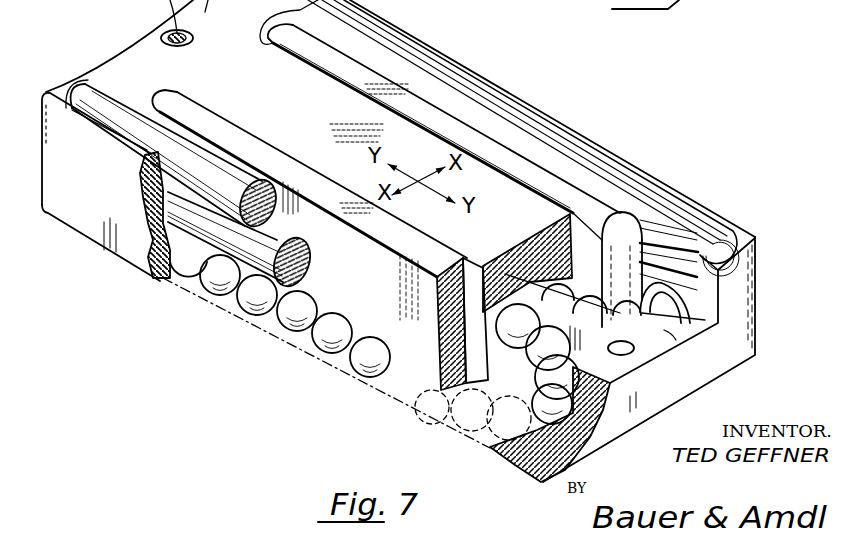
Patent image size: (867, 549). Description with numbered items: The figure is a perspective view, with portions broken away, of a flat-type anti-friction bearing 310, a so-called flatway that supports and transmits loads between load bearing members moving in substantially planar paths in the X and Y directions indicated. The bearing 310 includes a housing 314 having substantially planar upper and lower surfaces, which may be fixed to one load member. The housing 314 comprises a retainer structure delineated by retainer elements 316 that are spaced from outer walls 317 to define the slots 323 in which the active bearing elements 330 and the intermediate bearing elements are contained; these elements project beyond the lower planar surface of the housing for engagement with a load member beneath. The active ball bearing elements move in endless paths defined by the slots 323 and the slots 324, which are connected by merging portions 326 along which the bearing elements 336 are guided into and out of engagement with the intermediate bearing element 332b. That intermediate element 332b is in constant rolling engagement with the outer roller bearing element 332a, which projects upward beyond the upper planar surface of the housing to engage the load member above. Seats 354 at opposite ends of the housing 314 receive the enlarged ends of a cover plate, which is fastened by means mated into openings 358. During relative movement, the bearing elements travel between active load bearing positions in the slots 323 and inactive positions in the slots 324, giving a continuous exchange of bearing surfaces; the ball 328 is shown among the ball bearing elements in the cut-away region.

The bearing 310 is at (632, 147).
The housing 314 is at (765, 285).
The retainer elements 316 is at (207, 120).
The outer walls 317 is at (148, 206).
The slots 323 is at (392, 305).
The slots 324 is at (473, 300).
The merging portions 326 is at (675, 297).
The ball 328 is at (515, 336).
The active bearing elements 330 is at (322, 345).
The outer roller bearing element 332a is at (283, 222).
The intermediate bearing element 332b is at (303, 268).
The bearing elements 336 is at (478, 430).
The seats 354 is at (674, 340).
The openings 358 is at (633, 351).